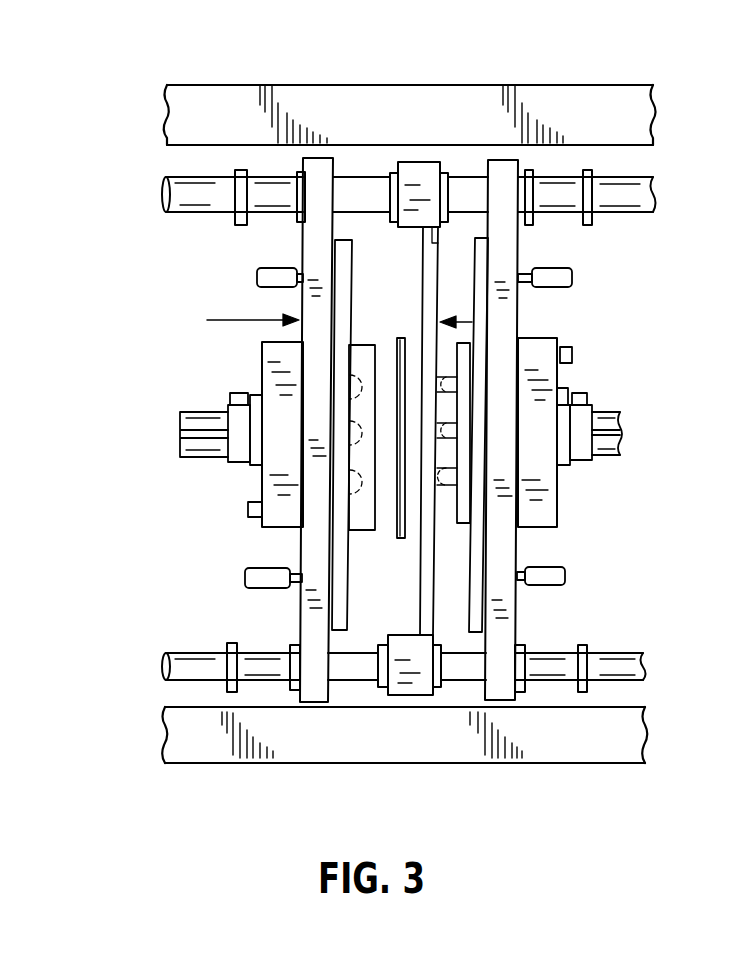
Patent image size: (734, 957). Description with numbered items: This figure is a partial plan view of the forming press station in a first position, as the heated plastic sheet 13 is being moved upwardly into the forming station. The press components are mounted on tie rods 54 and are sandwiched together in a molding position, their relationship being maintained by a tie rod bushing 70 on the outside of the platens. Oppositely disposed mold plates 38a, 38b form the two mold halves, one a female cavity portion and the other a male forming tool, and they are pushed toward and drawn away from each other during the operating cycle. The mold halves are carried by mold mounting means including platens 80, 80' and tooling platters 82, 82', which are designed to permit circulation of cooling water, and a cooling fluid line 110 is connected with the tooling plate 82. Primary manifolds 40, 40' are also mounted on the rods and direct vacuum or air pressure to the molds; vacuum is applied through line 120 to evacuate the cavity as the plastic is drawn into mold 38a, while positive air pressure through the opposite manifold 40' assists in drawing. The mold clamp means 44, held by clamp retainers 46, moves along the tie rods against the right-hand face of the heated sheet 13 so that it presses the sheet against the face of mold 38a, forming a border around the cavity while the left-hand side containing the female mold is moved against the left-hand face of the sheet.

The plastic sheet 13 is at (400, 338).
The mold plate 38a is at (356, 532).
The mold plate 38b is at (463, 525).
The primary manifold 40 is at (226, 434).
The primary manifold 40' is at (584, 421).
The mold clamp means 44 is at (425, 286).
The clamp retainer 46 is at (420, 172).
The tie rods 54 is at (648, 183).
The tie rod bushing 70 is at (266, 680).
The platen 80 is at (368, 431).
The platen 80' is at (534, 432).
The tooling platter 82 is at (269, 430).
The tooling platter 82' is at (562, 430).
The cooling fluid line 110 is at (245, 580).
The vacuum line 120 is at (248, 512).